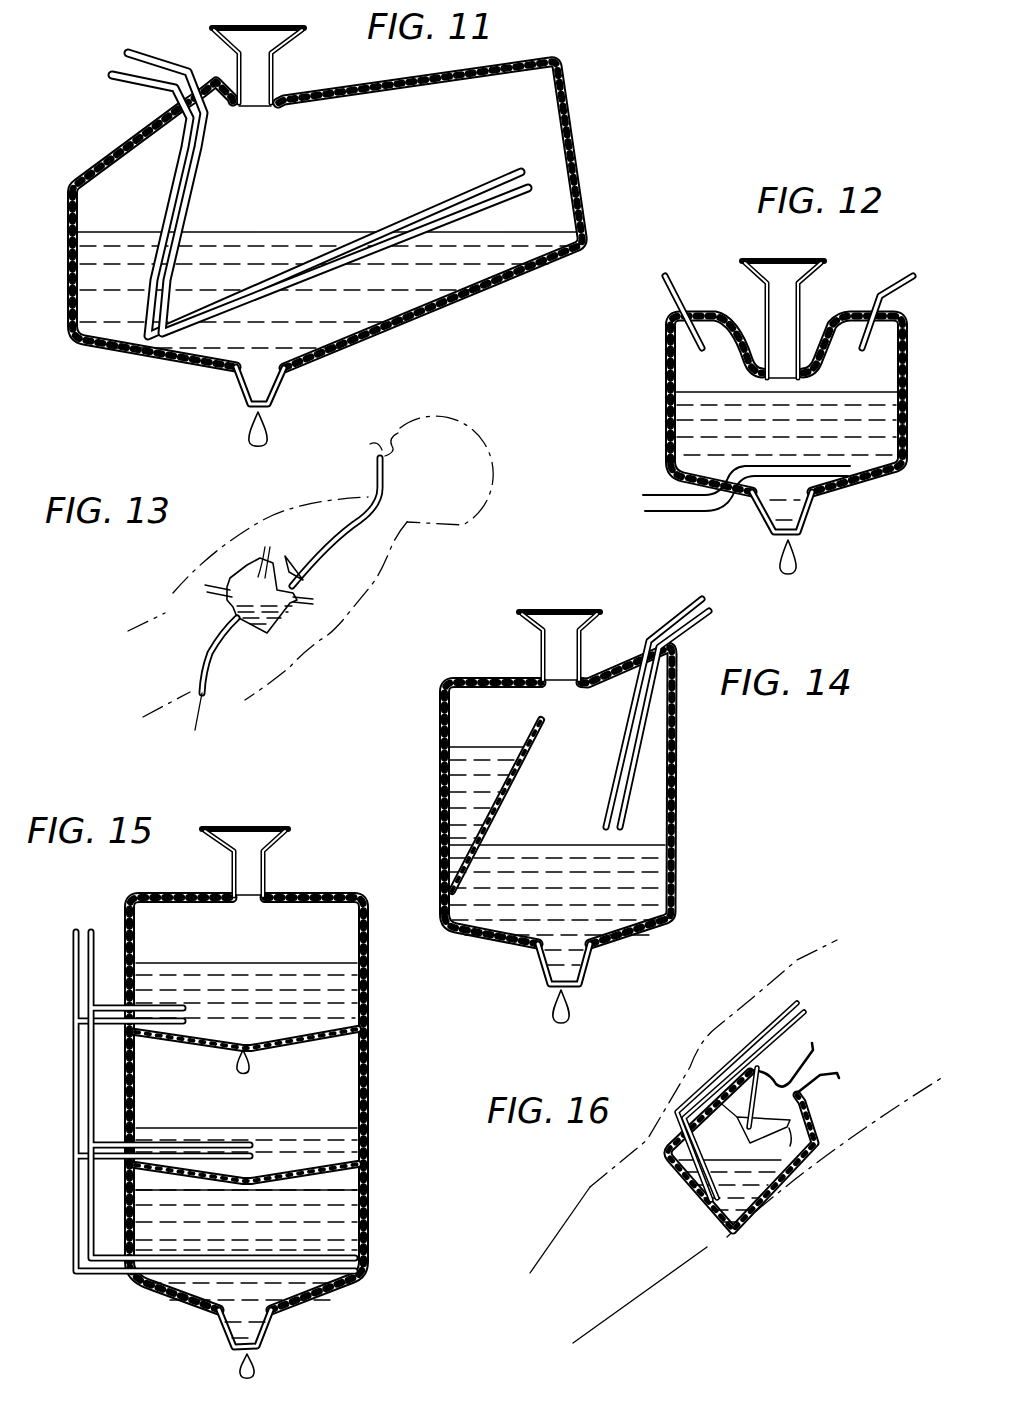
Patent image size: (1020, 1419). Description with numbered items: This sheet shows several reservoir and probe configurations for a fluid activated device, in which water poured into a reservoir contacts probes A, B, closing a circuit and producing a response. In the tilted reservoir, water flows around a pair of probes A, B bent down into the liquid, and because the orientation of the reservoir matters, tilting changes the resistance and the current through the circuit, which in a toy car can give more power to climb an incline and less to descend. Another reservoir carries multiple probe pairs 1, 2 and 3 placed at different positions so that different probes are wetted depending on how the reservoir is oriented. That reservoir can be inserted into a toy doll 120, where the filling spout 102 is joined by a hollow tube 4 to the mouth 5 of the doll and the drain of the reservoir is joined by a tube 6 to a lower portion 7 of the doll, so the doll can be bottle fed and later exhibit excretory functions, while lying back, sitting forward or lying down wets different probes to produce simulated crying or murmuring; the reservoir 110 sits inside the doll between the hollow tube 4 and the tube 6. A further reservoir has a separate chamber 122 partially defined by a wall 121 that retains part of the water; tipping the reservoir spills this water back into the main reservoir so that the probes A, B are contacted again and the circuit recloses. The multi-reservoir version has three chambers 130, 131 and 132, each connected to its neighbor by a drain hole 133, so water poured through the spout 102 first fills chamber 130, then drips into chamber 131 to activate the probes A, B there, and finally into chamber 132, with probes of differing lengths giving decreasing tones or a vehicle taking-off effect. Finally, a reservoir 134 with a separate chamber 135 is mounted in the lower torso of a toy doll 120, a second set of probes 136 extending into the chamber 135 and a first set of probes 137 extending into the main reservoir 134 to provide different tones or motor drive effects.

In FIG. 11, the probe A is at (112, 77).
In FIG. 14, the probe A is at (658, 699).
In FIG. 15, the probe A is at (207, 1088).
In FIG. 11, the probe B is at (128, 53).
In FIG. 14, the probe B is at (673, 714).
In FIG. 15, the probe B is at (222, 1081).
In FIG. 12, the probe pair 1 is at (665, 274).
In FIG. 12, the probe pair 2 is at (914, 274).
In FIG. 12, the probe pair 3 is at (645, 512).
In FIG. 13, the hollow tube 4 is at (397, 497).
In FIG. 13, the mouth 5 is at (378, 452).
In FIG. 13, the tube 6 is at (208, 677).
In FIG. 13, the lower portion 7 is at (205, 723).
In FIG. 13, the filling spout 102 is at (301, 573).
In FIG. 13, the stomach 110 is at (240, 620).
In FIG. 13, the toy doll 120 is at (388, 548).
In FIG. 16, the toy doll 120 is at (905, 1097).
In FIG. 14, the wall 121 is at (513, 770).
In FIG. 14, the separate chamber 122 is at (441, 784).
In FIG. 15, the chamber 130 is at (345, 945).
In FIG. 15, the chamber 131 is at (353, 1070).
In FIG. 15, the chamber 132 is at (340, 1225).
In FIG. 15, the drain hole 133 is at (257, 1053).
In FIG. 16, the main reservoir 134 is at (810, 1113).
In FIG. 16, the separate chamber 135 is at (763, 1130).
In FIG. 16, the second set of probes 136 is at (799, 1002).
In FIG. 16, the first set of probes 137 is at (810, 1022).